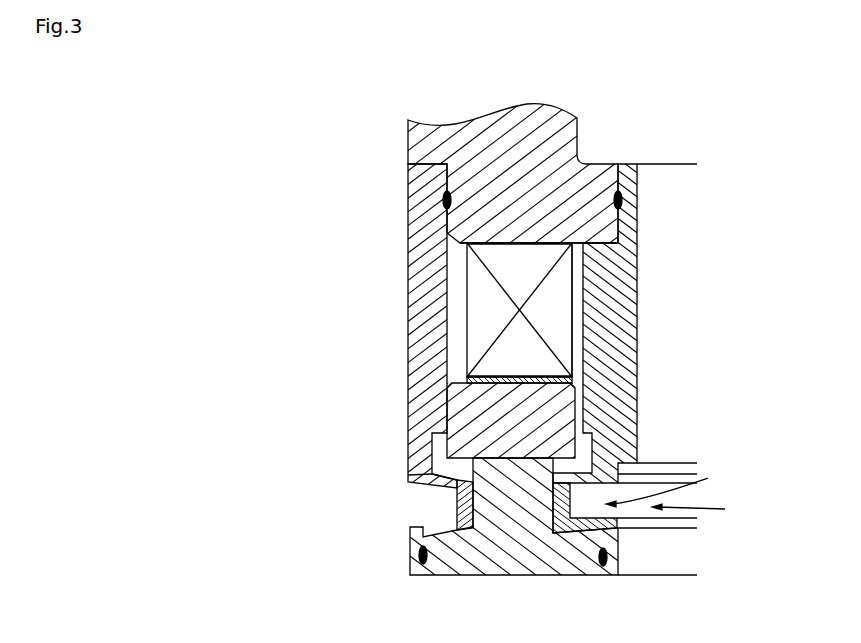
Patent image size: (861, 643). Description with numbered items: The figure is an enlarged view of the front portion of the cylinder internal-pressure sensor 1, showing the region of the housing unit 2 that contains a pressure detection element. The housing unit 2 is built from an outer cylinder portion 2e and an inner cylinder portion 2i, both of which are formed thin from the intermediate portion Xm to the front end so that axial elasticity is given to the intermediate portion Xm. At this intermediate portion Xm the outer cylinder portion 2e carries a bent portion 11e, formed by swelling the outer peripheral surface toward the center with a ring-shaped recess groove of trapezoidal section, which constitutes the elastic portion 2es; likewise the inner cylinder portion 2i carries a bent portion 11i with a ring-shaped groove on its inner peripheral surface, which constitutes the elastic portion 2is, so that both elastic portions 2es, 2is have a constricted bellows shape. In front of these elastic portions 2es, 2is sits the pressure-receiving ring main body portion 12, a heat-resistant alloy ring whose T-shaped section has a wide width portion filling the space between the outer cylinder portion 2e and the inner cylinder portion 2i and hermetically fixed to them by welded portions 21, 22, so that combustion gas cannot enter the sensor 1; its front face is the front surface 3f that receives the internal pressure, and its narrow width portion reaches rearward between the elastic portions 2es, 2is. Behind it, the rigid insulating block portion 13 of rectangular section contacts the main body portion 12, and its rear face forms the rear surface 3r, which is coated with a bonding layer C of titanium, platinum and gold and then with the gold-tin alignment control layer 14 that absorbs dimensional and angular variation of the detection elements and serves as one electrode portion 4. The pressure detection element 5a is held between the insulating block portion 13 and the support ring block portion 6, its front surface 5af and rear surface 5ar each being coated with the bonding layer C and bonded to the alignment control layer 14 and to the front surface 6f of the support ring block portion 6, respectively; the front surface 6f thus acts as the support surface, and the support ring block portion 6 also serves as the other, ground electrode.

The cylinder internal-pressure sensor 1 is at (383, 110).
The housing unit 2 is at (675, 225).
The outer cylinder portion 2e is at (408, 195).
The inner cylinder portion 2i is at (637, 253).
The elastic portion 2es is at (395, 520).
The elastic portion 2is is at (690, 474).
The front surface of the pressure-receiving ring block portion 3f is at (498, 578).
The rear surface of the pressure-receiving ring block portion 3r is at (512, 372).
The one electrode portion 4 is at (500, 378).
The pressure detection element 5a is at (466, 302).
The rear surface of the pressure detection element 5ar is at (560, 240).
The front surface of the pressure detection element 5af is at (497, 385).
The support ring block portion 6 is at (408, 146).
The front surface of the support ring block portion 6f is at (466, 268).
The bent portion 11e is at (457, 505).
The bent portion 11i is at (575, 512).
The pressure-receiving ring main body portion 12 is at (455, 488).
The insulating block portion 13 is at (575, 418).
The alignment control layer 14 is at (570, 347).
The welded portion 21 is at (423, 553).
The welded portion 22 is at (608, 555).
The bonding layer C is at (500, 398).
The intermediate portion Xm is at (688, 500).